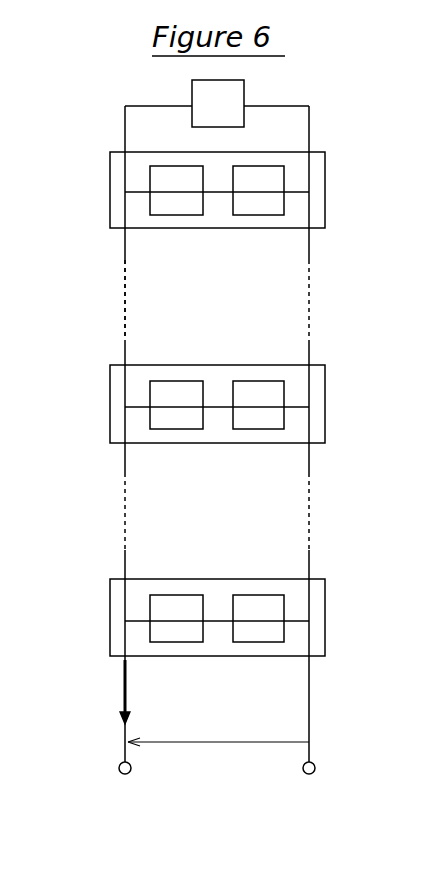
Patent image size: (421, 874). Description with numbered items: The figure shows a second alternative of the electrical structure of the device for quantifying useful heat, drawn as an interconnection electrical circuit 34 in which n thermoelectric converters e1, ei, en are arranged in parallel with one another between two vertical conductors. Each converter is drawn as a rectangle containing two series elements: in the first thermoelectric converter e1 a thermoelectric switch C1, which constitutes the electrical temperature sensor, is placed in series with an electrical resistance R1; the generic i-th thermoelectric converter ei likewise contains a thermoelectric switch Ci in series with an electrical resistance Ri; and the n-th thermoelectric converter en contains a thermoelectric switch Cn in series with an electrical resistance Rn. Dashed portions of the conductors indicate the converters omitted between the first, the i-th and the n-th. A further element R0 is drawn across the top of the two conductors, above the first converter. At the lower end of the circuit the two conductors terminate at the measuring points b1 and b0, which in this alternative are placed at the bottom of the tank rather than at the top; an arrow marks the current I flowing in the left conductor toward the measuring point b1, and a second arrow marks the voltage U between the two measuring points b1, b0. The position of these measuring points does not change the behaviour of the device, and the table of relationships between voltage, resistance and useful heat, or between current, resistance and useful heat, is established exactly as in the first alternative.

The interconnection electrical circuit 34 is at (124, 310).
The first thermoelectric converter e1 is at (189, 190).
The i-th thermoelectric converter ei is at (189, 404).
The n-th thermoelectric converter en is at (189, 617).
The ohmic resistance R0 is at (218, 103).
The first electrical temperature sensor C1 is at (176, 190).
The first electrical resistance R1 is at (258, 190).
The thermoelectric switch Ci is at (176, 405).
The electrical resistance Ri is at (258, 405).
The n-th electrical temperature sensor Cn is at (176, 618).
The n-th electrical resistance Rn is at (258, 618).
The current I is at (118, 692).
The voltage U is at (218, 731).
The measuring point b1 is at (122, 787).
The measuring point b0 is at (310, 787).